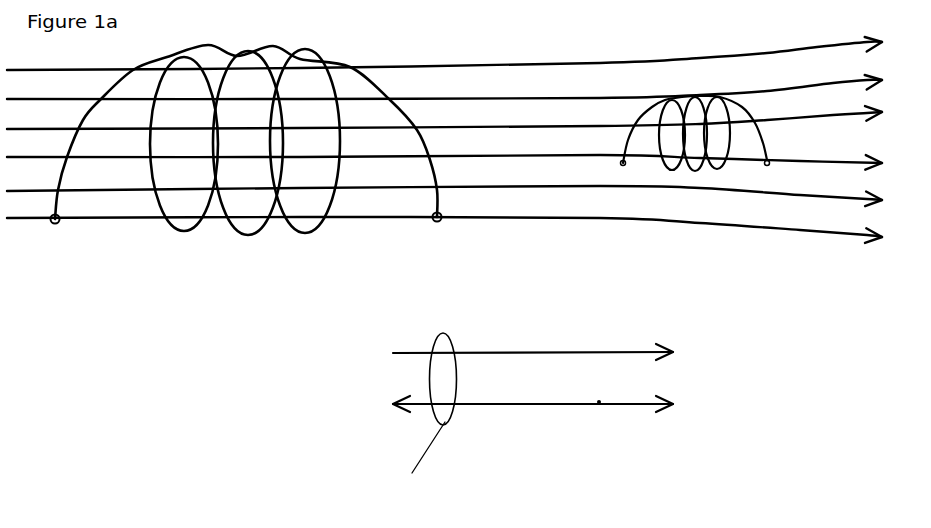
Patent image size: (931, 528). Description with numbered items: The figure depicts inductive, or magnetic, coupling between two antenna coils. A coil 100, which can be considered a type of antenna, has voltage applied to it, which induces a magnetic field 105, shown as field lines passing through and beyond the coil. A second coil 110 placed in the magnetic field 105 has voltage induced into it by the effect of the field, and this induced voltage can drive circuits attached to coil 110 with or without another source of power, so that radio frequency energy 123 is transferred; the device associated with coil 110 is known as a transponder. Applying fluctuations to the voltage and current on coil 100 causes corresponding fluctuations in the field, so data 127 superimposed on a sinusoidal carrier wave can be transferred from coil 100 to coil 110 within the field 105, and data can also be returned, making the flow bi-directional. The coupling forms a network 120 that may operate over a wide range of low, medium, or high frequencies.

The coil 100 is at (423, 225).
The magnetic field 105 is at (560, 220).
The coil 110 is at (758, 168).
The network 120 is at (314, 403).
The radio frequency energy 123 is at (548, 357).
The data 127 is at (550, 411).